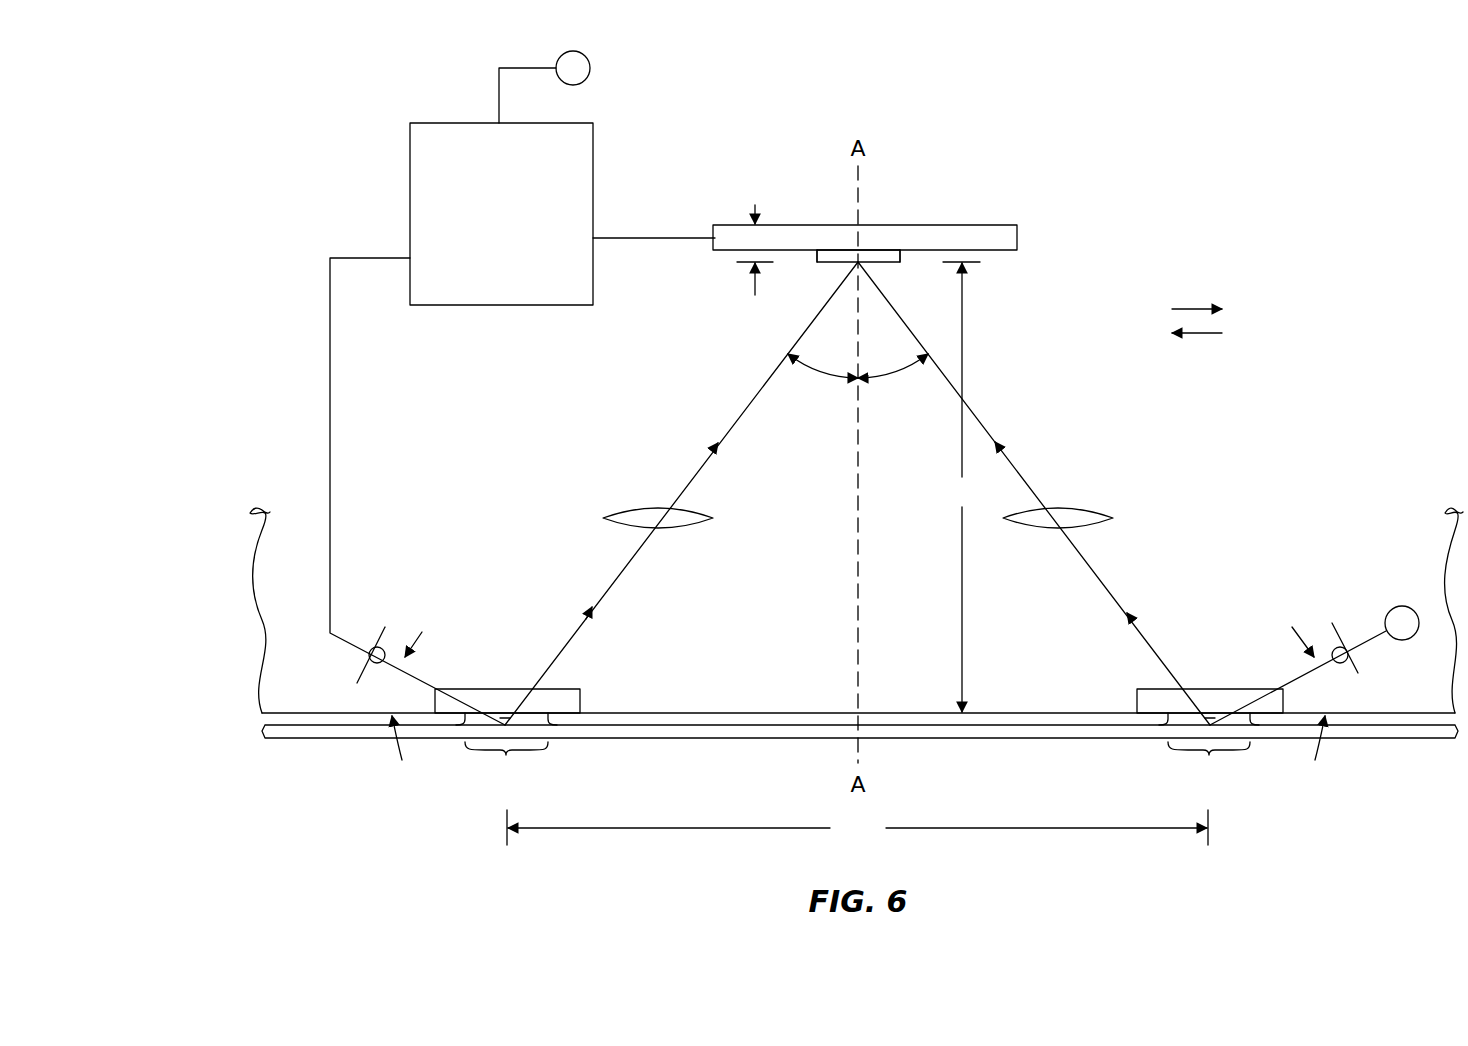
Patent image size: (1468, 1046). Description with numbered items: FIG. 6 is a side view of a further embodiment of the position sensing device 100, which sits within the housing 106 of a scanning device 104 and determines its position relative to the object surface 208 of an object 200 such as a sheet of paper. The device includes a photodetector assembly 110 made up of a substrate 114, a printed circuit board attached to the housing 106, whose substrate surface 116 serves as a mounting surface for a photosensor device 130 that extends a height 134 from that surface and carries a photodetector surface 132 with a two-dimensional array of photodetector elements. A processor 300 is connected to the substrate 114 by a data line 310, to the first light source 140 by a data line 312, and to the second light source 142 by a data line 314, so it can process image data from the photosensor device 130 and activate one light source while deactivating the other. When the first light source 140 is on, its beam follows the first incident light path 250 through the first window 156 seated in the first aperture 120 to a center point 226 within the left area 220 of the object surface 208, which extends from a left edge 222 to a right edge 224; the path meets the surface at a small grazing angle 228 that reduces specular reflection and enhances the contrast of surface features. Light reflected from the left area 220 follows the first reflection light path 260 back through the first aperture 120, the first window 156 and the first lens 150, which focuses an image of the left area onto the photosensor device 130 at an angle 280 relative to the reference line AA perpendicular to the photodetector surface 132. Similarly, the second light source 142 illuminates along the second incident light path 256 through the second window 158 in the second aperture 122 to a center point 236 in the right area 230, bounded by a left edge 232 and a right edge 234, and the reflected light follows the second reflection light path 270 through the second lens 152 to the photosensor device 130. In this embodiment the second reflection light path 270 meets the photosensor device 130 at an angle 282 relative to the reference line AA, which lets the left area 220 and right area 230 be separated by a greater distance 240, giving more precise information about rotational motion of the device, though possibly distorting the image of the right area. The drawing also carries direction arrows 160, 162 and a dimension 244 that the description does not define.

The position sensing device 100 is at (1122, 150).
The scanning device 104 is at (225, 665).
The housing 106 is at (255, 603).
The photodetector assembly 110 is at (903, 219).
The substrate 114 is at (1017, 237).
The substrate surface 116 is at (1000, 252).
The first aperture 120 is at (520, 620).
The second aperture 122 is at (1195, 615).
The photosensor device 130 is at (817, 258).
The photodetector surface 132 is at (883, 262).
The height 134 is at (755, 295).
The first light source 140 is at (355, 672).
The second light source 142 is at (1360, 672).
The first lens 150 is at (612, 508).
The second lens 152 is at (1090, 508).
The first window 156 is at (572, 689).
The second window 158 is at (1150, 689).
The forward web direction 160 is at (1186, 307).
The reverse web direction 162 is at (1208, 334).
The object 200 is at (1392, 737).
The object surface 208 is at (905, 713).
The left area 220 is at (506, 769).
The left edge 222 is at (462, 722).
The right edge 224 is at (551, 722).
The center point 226 is at (505, 713).
The grazing angle 228 is at (418, 637).
The right area 230 is at (1209, 769).
The left edge 232 is at (1166, 722).
The right edge 234 is at (1253, 722).
The center point 236 is at (1210, 713).
The distance 240 is at (857, 827).
The sensor height 244 is at (962, 487).
The first incident light path 250 is at (432, 688).
The second incident light path 256 is at (1288, 688).
The first reflection light path 260 is at (755, 400).
The second reflection light path 270 is at (1015, 462).
The angle 280 is at (820, 380).
The angle 282 is at (895, 380).
The processor 300 is at (501, 214).
The data line 310 is at (651, 236).
The data line 312 is at (499, 92).
The data line 314 is at (1376, 636).